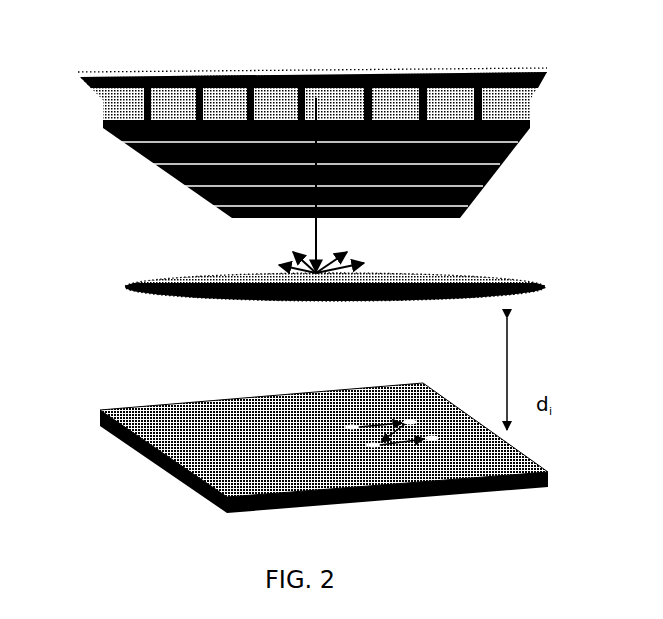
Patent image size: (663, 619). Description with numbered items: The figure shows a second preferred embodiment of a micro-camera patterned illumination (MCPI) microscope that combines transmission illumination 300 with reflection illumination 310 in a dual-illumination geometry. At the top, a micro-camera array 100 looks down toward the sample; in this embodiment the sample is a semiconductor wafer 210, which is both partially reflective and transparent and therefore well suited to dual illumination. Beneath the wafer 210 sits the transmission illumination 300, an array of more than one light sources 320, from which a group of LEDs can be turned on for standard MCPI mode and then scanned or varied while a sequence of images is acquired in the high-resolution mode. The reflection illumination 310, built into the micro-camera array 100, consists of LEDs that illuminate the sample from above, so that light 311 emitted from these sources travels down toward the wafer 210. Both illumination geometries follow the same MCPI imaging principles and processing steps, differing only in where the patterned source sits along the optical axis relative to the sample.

The micro-camera array 100 is at (362, 72).
The reflection illumination 310 is at (302, 113).
The light emitted from light source 311 is at (340, 185).
The semiconductor wafer 210 is at (125, 292).
The transmission illumination 300 is at (120, 410).
The light sources 320 is at (432, 442).